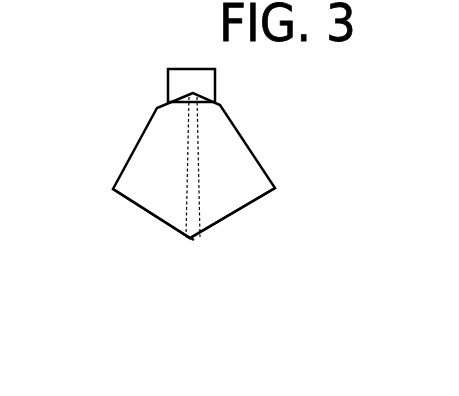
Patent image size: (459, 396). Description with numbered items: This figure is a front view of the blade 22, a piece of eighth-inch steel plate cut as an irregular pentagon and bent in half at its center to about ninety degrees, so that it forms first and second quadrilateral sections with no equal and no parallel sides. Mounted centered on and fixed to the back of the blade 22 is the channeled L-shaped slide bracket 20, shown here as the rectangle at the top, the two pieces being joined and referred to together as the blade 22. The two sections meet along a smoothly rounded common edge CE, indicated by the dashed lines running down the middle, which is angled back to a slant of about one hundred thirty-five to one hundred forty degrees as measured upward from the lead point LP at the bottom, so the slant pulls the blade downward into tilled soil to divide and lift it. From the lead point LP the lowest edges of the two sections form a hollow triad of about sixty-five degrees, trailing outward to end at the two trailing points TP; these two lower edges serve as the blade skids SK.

The slide bracket 20 is at (178, 85).
The blade 22 is at (233, 157).
The common edge CE is at (186, 152).
The trailing points TP is at (113, 189).
The blade skids SK is at (147, 215).
The lead point LP is at (191, 240).